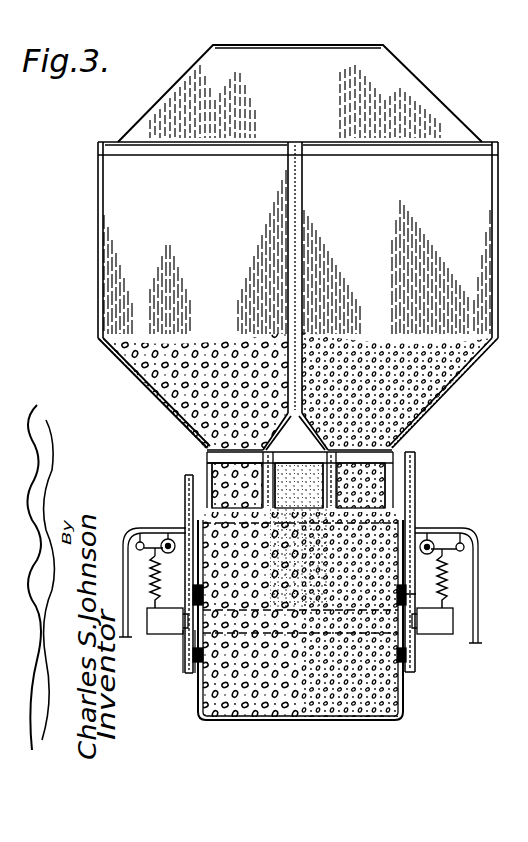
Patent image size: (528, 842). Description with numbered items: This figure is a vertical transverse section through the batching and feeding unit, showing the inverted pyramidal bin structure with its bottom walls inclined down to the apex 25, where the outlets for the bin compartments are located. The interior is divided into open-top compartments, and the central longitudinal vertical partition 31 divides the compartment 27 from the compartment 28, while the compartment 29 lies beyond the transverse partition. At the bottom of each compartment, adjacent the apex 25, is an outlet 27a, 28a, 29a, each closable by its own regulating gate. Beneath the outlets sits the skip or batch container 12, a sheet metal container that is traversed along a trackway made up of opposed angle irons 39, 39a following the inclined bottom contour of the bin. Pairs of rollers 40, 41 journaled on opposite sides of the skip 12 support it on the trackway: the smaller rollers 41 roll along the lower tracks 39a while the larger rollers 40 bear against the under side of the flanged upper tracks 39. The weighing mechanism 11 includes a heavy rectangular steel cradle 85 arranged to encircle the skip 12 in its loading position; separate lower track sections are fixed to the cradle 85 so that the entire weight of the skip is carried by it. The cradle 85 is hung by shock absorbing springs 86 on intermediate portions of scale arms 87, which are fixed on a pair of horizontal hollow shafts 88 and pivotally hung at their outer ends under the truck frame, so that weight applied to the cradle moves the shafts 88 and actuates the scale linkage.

The weighing mechanism 11 is at (164, 520).
The skip or batch container 12 is at (403, 704).
The apex 25 is at (418, 439).
The bin compartment 27 is at (178, 395).
The outlet 27a is at (222, 466).
The bin compartment 28 is at (437, 380).
The outlet 28a is at (414, 463).
The bin compartment 29 is at (312, 437).
The outlet 29a is at (322, 472).
The central longitudinal vertical partition 31 is at (302, 214).
The flanged upper angle irons or tracks 39 is at (186, 477).
The lower tracks or angle irons 39a is at (186, 642).
The larger rollers 40 is at (416, 660).
The smaller rollers 41 is at (416, 595).
The frame or cradle 85 is at (438, 634).
The shock absorbing springs 86 is at (186, 638).
The scale arms 87 is at (141, 549).
The horizontal hollow shafts 88 is at (158, 552).